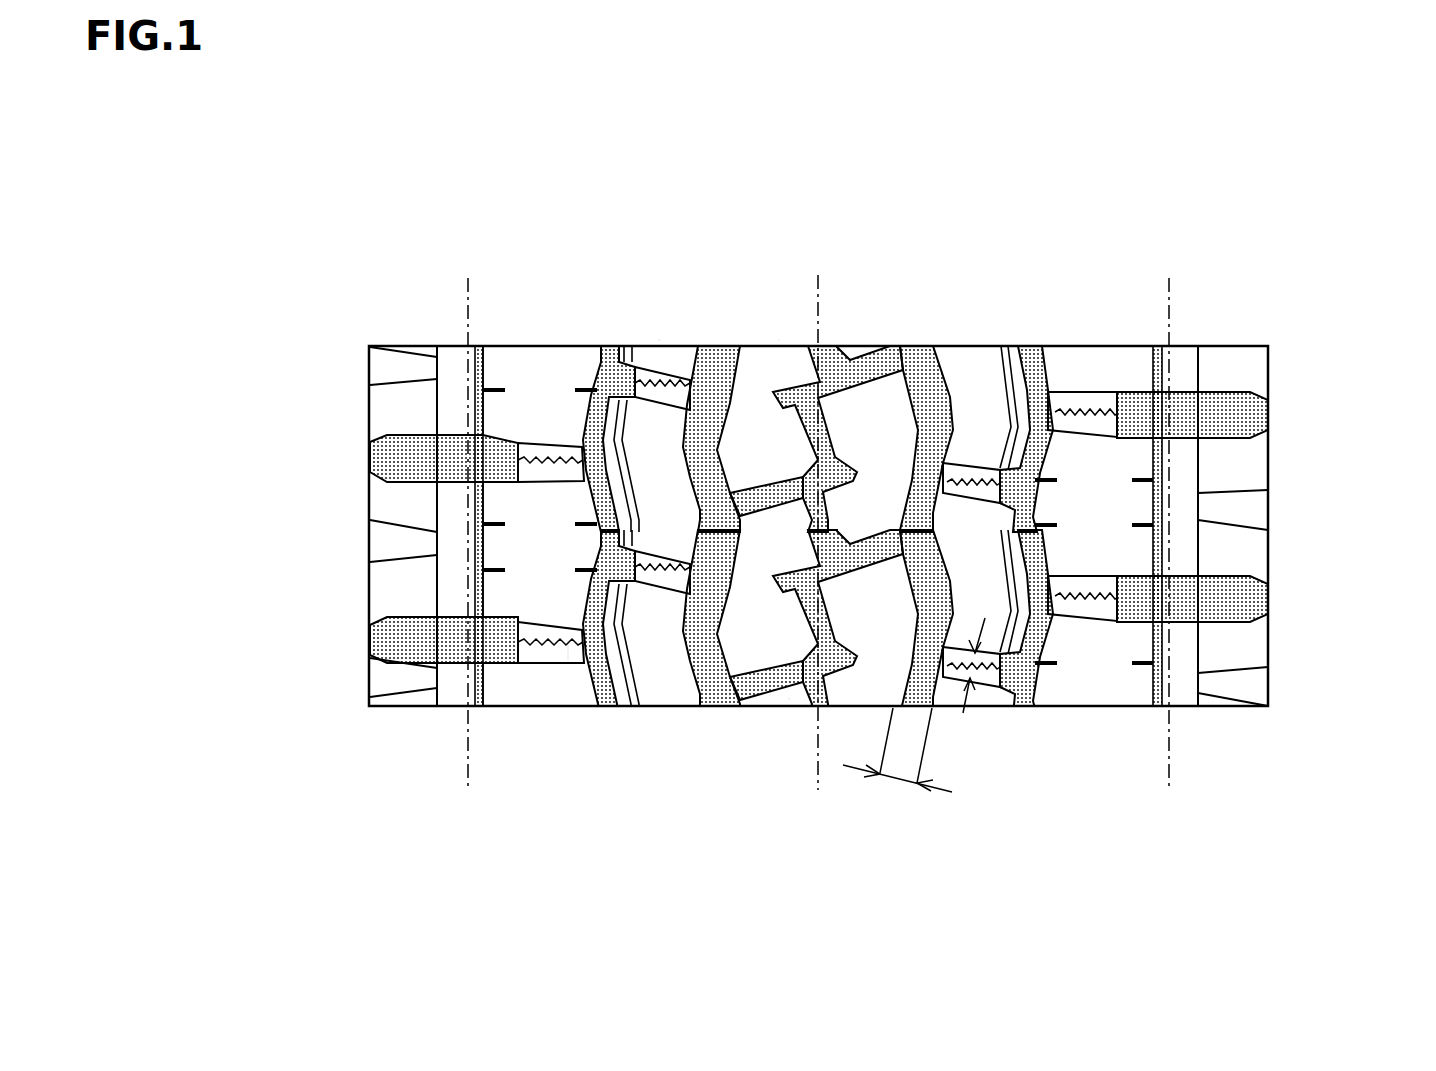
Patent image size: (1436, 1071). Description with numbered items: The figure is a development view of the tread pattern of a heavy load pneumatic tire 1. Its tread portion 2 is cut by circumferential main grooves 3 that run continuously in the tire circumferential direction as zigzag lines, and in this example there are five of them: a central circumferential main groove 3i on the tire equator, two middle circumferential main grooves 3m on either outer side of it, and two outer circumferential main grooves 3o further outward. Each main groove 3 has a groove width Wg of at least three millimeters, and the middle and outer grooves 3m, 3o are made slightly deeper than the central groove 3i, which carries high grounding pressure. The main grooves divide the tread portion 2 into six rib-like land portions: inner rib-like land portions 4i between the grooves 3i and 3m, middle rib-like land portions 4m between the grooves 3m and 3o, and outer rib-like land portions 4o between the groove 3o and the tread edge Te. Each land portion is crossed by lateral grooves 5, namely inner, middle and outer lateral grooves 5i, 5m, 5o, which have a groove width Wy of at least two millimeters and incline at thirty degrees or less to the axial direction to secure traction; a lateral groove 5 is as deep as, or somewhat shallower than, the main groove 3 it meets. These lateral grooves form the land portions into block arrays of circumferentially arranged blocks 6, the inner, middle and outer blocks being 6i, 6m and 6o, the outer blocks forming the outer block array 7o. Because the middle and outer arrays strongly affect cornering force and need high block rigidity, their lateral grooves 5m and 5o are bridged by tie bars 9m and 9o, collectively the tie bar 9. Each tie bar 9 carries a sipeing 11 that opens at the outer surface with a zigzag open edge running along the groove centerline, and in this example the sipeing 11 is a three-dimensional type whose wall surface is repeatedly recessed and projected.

The pneumatic tire 1 is at (901, 439).
The tread portion 2 is at (818, 526).
The circumferential main groove 3 is at (1030, 362).
The outer circumferential main groove 3o is at (925, 448).
The middle circumferential main groove 3m is at (933, 346).
The central circumferential main groove 3i is at (825, 346).
The outer rib-like land portion 4o is at (819, 400).
The middle rib-like land portion 4m is at (800, 217).
The inner rib-like land portion 4i is at (813, 217).
The lateral groove 5 is at (728, 517).
The outer lateral groove 5o is at (492, 462).
The middle lateral groove 5m is at (613, 389).
The inner lateral groove 5i is at (463, 570).
The block 6 is at (788, 697).
The outer block 6o is at (530, 655).
The middle block 6m is at (663, 687).
The inner block 6i is at (806, 805).
The outer block array 7o is at (819, 526).
The tie bar 9 is at (652, 583).
The outer tie bar 9o is at (520, 707).
The middle tie bar 9m is at (650, 713).
The sipeing 11 is at (637, 761).
The tread edge Te is at (1170, 292).
The groove width of circumferential main groove Wg is at (895, 782).
The groove width of lateral groove Wy is at (977, 678).